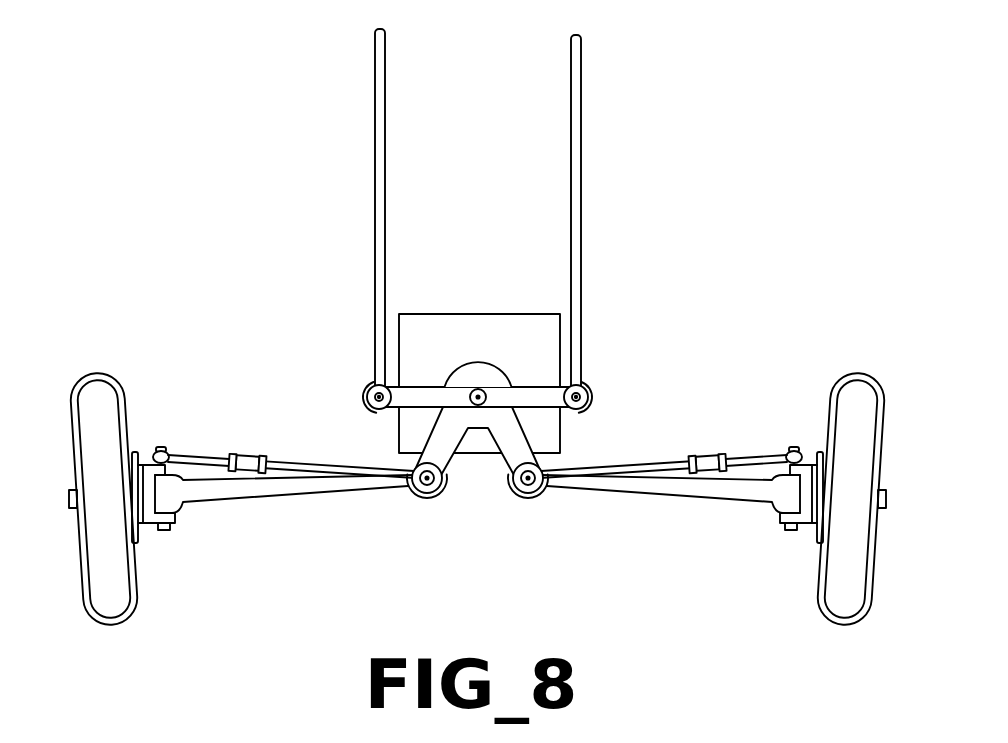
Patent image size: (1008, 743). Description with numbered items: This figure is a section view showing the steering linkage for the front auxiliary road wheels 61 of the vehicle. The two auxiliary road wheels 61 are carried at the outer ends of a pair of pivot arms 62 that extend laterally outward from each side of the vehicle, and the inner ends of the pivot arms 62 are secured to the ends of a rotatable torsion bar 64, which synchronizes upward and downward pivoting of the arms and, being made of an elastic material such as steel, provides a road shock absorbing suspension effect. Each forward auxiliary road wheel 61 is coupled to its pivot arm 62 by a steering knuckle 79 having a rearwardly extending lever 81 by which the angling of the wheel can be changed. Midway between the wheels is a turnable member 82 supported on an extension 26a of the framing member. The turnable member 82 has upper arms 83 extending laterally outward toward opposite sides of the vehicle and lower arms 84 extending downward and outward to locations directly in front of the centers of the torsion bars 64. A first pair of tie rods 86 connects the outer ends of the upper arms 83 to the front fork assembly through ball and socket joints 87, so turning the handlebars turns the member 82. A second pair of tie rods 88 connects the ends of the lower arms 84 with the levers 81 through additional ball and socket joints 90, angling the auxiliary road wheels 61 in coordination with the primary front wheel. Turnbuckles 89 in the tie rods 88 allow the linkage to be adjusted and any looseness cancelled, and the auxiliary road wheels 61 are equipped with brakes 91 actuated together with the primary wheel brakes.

The extension of framing member 26a is at (484, 313).
The auxiliary road wheel 61 is at (98, 373).
The pivot arm 62 is at (323, 495).
The torsion bar 64 is at (423, 500).
The steering knuckle 79 is at (183, 538).
The lever 81 is at (167, 452).
The turnable member 82 is at (525, 420).
The upper arm 83 is at (422, 386).
The lower arm 84 is at (447, 448).
The first tie rod 86 is at (375, 155).
The ball and socket joint 87 is at (363, 392).
The second tie rod 88 is at (287, 461).
The turnbuckle 89 is at (247, 452).
The ball and socket joint 90 is at (157, 450).
The brake 91 is at (142, 540).